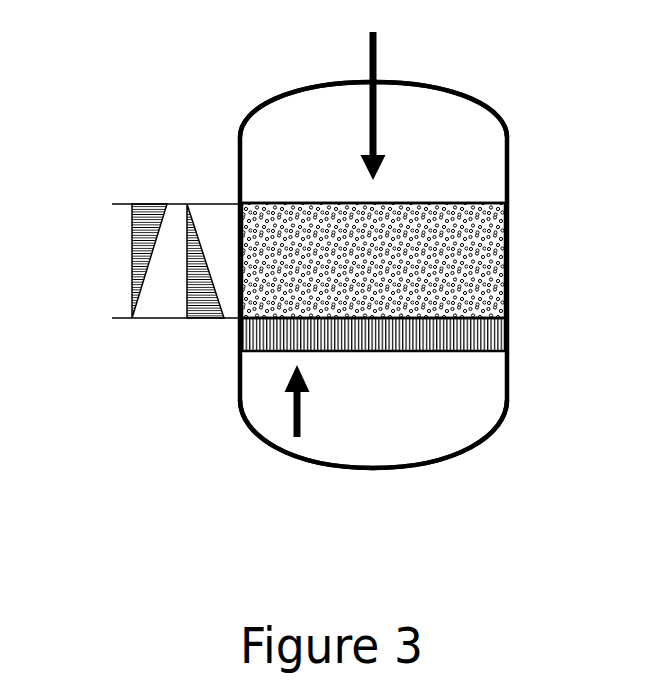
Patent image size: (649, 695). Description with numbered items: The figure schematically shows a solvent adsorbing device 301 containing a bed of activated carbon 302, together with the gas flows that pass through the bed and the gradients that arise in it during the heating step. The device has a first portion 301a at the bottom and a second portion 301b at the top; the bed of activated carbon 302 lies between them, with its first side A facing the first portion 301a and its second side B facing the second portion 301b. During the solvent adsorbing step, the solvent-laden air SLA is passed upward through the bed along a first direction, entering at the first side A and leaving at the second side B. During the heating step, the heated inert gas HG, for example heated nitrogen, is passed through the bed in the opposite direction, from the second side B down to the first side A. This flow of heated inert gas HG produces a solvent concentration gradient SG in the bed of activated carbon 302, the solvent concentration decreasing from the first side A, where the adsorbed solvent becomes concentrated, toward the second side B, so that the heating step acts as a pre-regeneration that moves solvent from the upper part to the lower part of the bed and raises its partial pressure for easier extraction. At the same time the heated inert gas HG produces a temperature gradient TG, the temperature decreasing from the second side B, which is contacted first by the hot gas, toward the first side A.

The solvent adsorbing device 301 is at (432, 475).
The second portion of the solvent adsorbing device 301b is at (480, 132).
The first portion of the solvent adsorbing device 301a is at (482, 428).
The bed of activated carbon 302 is at (477, 268).
The second side of the bed B is at (467, 192).
The first side of the bed A is at (469, 366).
The heated inert gas HG is at (378, 48).
The solvent-laden air SLA is at (291, 404).
The temperature gradient TG is at (132, 238).
The solvent concentration gradient SG is at (205, 316).